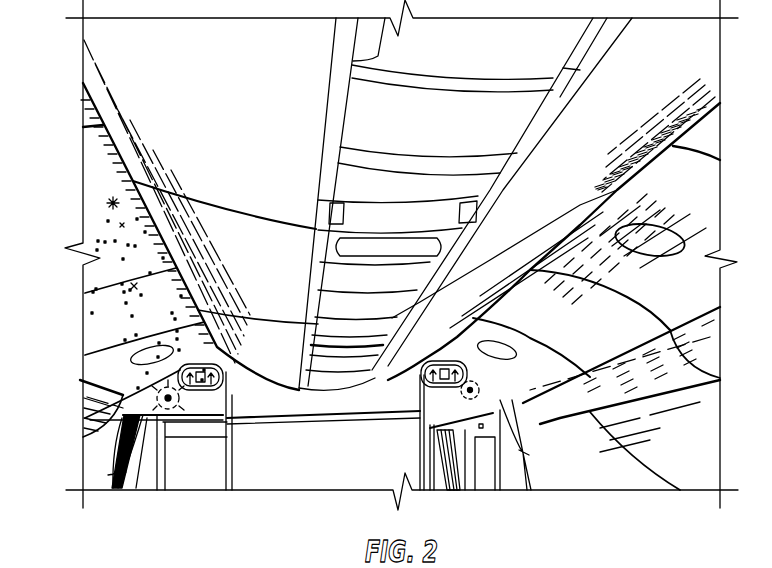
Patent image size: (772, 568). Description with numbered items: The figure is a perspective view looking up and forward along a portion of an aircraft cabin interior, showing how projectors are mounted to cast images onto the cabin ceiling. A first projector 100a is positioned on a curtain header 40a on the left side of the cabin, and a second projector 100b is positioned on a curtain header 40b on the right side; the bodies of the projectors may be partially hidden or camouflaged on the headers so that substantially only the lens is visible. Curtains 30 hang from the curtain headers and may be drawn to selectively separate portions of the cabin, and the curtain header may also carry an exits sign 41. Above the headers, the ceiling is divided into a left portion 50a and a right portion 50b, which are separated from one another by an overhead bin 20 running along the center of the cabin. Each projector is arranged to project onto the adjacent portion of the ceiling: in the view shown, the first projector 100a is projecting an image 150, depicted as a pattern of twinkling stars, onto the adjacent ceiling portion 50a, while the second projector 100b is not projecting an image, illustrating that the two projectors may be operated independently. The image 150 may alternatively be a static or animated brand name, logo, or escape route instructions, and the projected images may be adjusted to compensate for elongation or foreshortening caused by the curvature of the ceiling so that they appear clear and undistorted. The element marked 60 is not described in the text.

The overhead bin 20 is at (234, 133).
The image 150 is at (113, 203).
The ceiling portion 50a is at (152, 265).
The ceiling portion 50b is at (681, 294).
The exits sign 41 is at (217, 367).
The curtain header 40a is at (80, 381).
The curtain header 40b is at (507, 437).
The curtains 30 is at (110, 470).
The first projector 100a is at (176, 415).
The second projector 100b is at (468, 401).
The door 60 is at (472, 456).